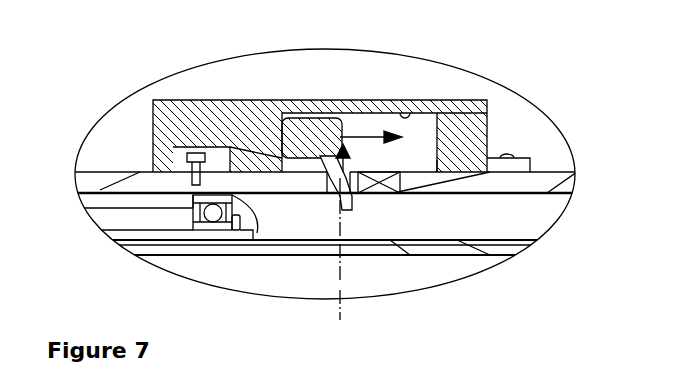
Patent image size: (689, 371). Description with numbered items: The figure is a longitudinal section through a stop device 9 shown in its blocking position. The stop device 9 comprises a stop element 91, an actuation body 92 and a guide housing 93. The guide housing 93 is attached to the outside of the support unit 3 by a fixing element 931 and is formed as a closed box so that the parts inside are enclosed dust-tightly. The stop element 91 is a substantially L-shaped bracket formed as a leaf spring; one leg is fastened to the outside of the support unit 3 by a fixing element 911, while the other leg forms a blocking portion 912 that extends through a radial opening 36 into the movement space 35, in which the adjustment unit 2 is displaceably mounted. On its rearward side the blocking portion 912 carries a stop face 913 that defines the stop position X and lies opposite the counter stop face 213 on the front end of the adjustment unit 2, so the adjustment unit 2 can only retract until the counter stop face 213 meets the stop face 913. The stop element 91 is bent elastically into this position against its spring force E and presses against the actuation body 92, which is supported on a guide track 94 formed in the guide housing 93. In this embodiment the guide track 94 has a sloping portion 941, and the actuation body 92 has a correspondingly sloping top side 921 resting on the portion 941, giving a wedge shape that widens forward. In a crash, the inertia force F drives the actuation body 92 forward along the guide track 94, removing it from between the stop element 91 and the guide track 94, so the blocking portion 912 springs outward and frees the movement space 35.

The adjustment unit 2 is at (112, 201).
The support unit 3 is at (118, 173).
The stop device 9 is at (369, 78).
The stop element 91 is at (232, 165).
The fixing element 911 is at (191, 148).
The blocking portion 912 is at (350, 198).
The stop face 913 is at (336, 200).
The actuation body 92 is at (308, 118).
The top side 921 is at (206, 193).
The guide housing 93 is at (452, 133).
The fixing element 931 is at (508, 160).
The guide track 94 is at (407, 110).
The portion 941 is at (300, 113).
The counter stop face 213 is at (245, 243).
The movement space 35 is at (300, 208).
The opening 36 is at (352, 193).
The spring force E is at (345, 128).
The inertia force F is at (370, 172).
The stop position X is at (343, 308).